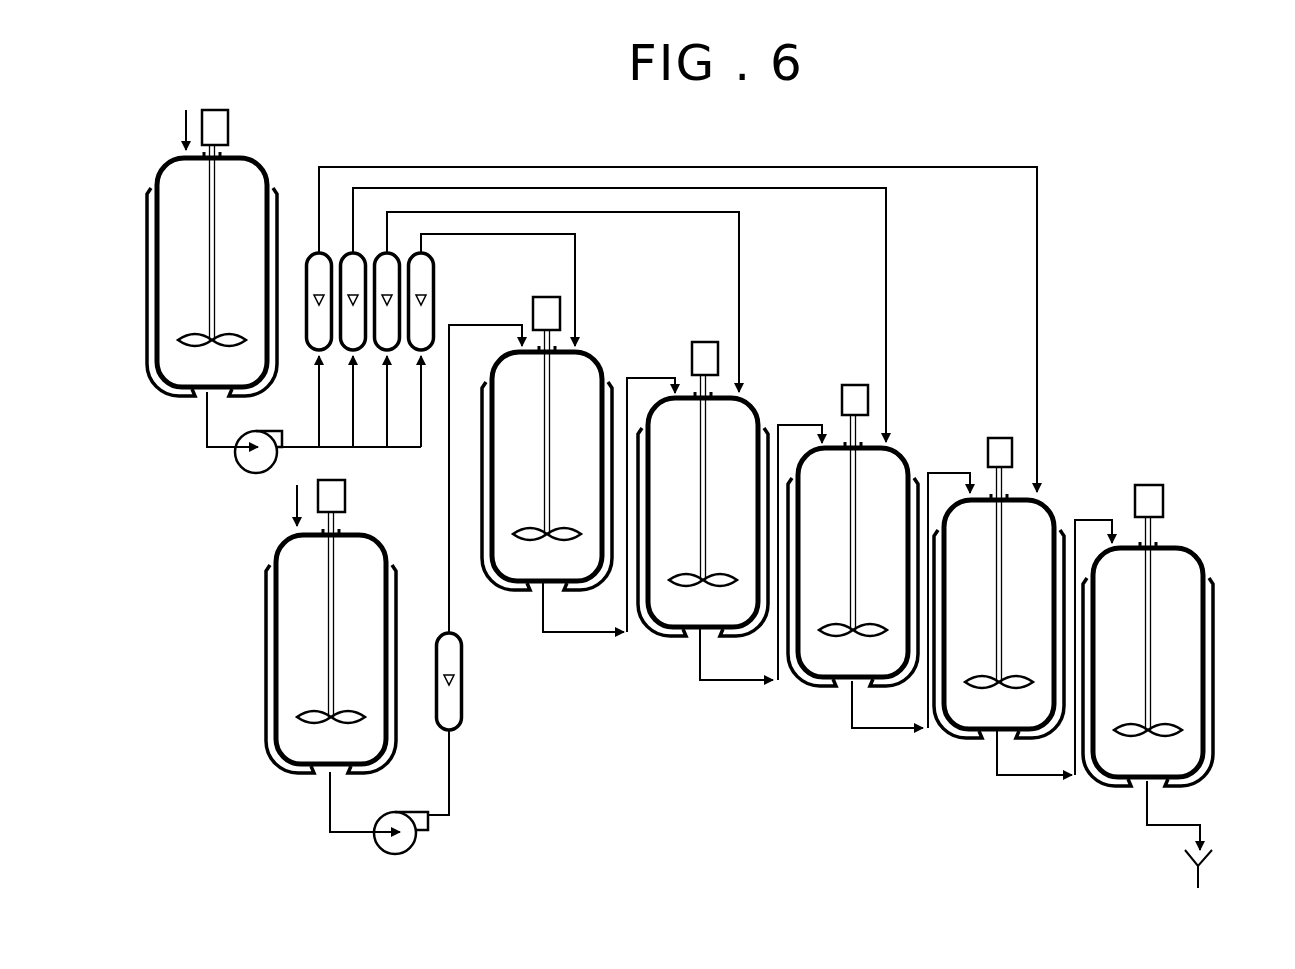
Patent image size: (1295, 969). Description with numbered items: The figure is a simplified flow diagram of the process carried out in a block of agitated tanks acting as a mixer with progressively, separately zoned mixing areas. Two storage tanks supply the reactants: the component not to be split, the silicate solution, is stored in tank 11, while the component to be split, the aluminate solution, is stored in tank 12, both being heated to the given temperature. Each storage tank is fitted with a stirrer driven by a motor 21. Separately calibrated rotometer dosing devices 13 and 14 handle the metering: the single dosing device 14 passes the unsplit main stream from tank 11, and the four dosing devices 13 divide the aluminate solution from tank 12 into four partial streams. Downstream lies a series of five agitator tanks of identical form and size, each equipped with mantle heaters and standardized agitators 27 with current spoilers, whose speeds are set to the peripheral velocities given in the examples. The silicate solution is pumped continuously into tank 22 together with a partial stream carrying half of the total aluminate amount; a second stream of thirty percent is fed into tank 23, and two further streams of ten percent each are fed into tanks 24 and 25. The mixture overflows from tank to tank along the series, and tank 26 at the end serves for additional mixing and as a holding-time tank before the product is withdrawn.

The tank 11 is at (295, 641).
The tank 12 is at (180, 305).
The dosing devices 13 is at (352, 283).
The dosing device 14 is at (463, 657).
The stirrer motor 21 is at (215, 122).
The tank 22 is at (505, 556).
The tank 23 is at (668, 607).
The tank 24 is at (818, 656).
The tank 25 is at (972, 705).
The tank 26 is at (1188, 708).
The agitators 27 is at (548, 310).